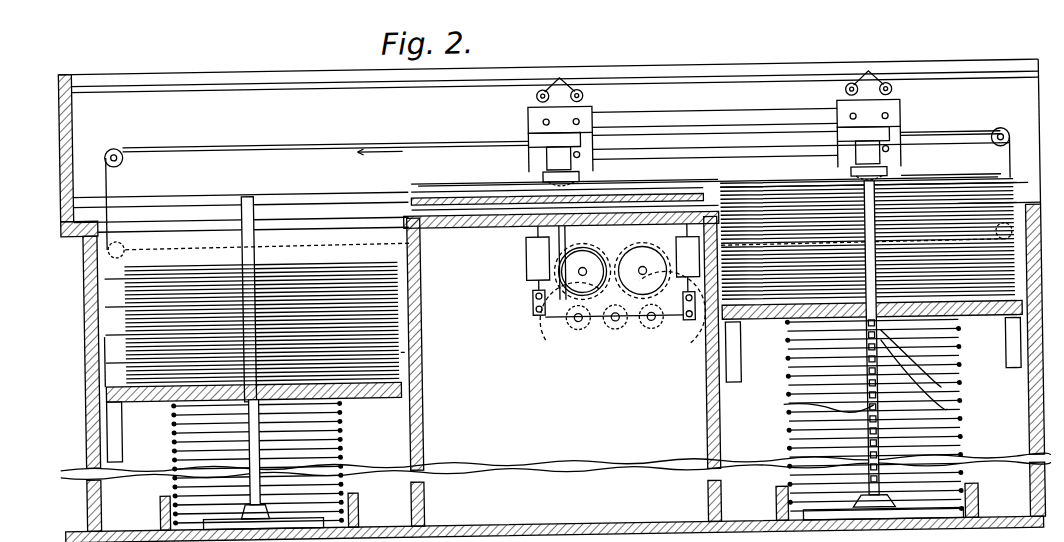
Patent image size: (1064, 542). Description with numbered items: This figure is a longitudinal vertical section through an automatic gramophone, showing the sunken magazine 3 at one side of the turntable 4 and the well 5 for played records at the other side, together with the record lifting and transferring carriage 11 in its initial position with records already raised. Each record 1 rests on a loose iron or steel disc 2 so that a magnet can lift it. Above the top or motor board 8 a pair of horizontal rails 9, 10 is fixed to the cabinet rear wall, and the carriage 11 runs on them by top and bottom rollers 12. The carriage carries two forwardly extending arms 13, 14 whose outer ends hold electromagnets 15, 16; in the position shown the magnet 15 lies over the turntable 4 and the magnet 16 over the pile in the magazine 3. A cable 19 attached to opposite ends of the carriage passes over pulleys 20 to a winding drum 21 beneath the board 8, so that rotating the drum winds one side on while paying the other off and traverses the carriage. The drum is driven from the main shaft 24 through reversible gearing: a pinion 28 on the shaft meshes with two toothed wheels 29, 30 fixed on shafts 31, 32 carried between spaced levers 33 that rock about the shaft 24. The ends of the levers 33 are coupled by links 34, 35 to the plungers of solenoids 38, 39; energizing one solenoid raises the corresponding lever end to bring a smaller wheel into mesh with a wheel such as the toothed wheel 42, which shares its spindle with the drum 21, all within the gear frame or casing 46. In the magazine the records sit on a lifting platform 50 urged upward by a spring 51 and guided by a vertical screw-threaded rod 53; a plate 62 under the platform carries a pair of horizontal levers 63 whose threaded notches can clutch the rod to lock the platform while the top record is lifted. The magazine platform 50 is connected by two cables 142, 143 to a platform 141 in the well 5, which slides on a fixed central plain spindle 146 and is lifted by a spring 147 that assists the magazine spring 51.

The record 1 is at (684, 160).
The loose disc 2 is at (656, 160).
The magazine 3 is at (706, 410).
The turntable 4 is at (416, 185).
The well 5 is at (405, 318).
The top or motor board 8 is at (415, 197).
The horizontal rail 9 is at (710, 79).
The horizontal rail 10 is at (212, 190).
The carriage 11 is at (531, 112).
The roller 12 is at (563, 78).
The arm 13 is at (531, 131).
The arm 14 is at (892, 138).
The electromagnet 15 is at (549, 152).
The electromagnet 16 is at (880, 160).
The cable 19 is at (292, 142).
The pulley 20 is at (116, 142).
The winding drum 21 is at (530, 279).
The main shaft 24 is at (612, 332).
The pinion 28 is at (622, 385).
The toothed wheel 29 is at (560, 330).
The toothed wheel 30 is at (628, 330).
The shaft 31 is at (572, 335).
The shaft 32 is at (650, 332).
The lever 33 is at (686, 323).
The link 34 is at (560, 322).
The link 35 is at (735, 350).
The solenoid 38 is at (527, 252).
The solenoid 39 is at (723, 174).
The toothed wheel 42 is at (533, 312).
The gear frame or casing 46 is at (590, 335).
The lifting platform 50 is at (960, 360).
The spring 51 is at (958, 440).
The screw-threaded rod 53 is at (812, 400).
The plate 62 is at (945, 385).
The horizontal lever 63 is at (948, 412).
The platform 141 is at (105, 388).
The cable 142 is at (404, 360).
The cable 143 is at (110, 368).
The fixed central plain spindle 146 is at (172, 404).
The spring 147 is at (172, 430).